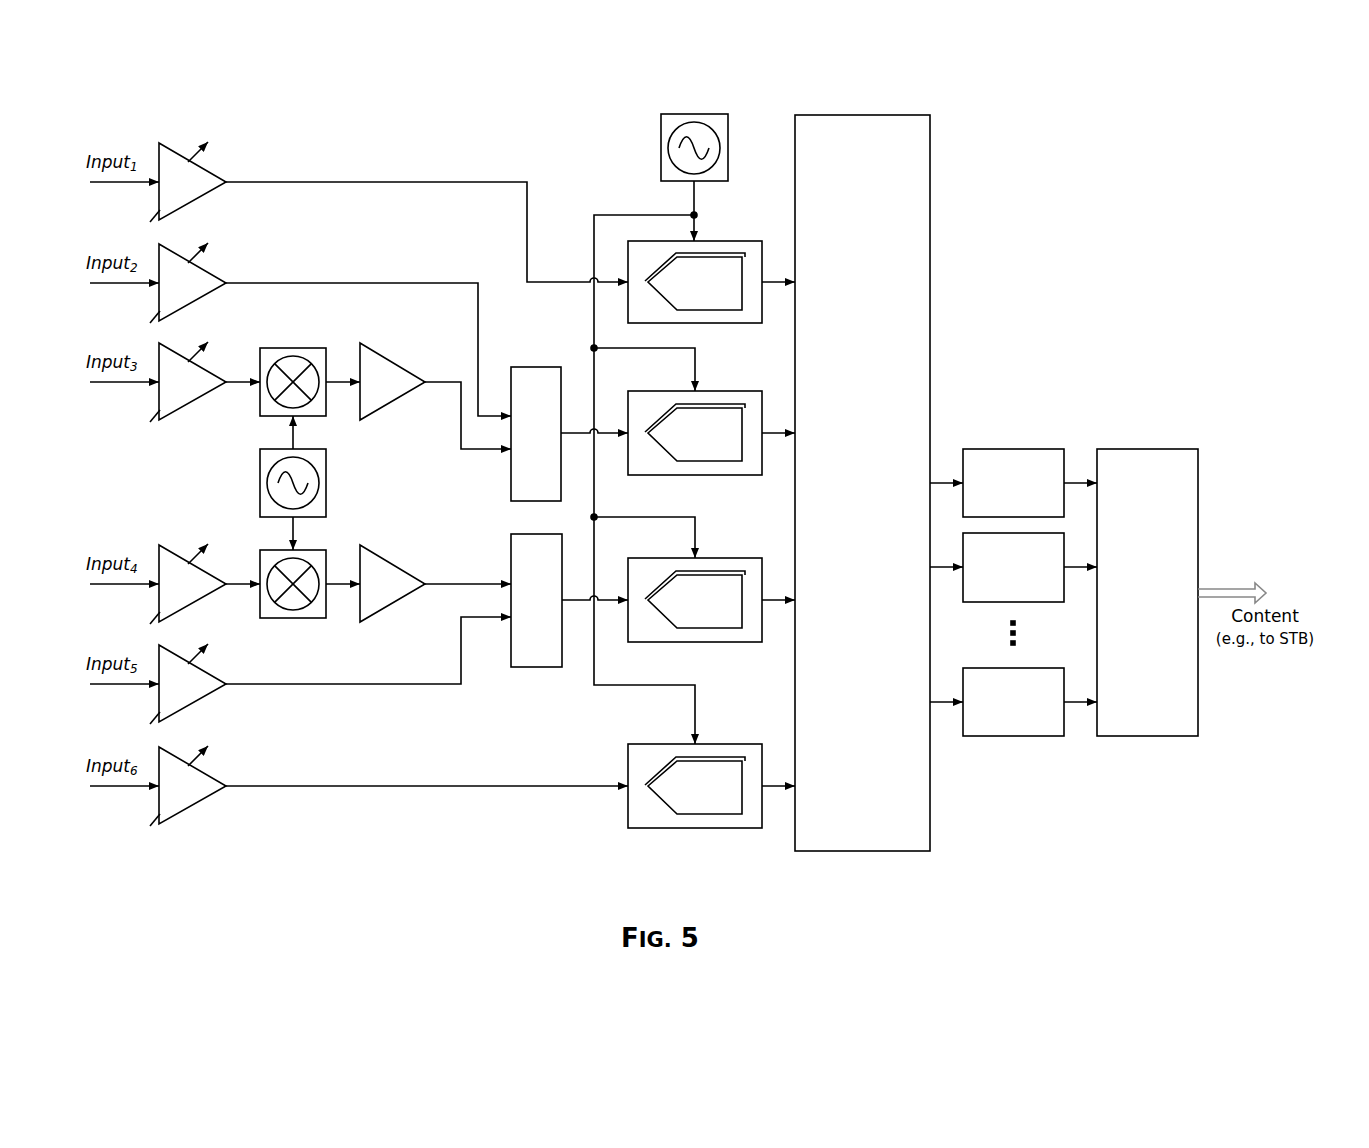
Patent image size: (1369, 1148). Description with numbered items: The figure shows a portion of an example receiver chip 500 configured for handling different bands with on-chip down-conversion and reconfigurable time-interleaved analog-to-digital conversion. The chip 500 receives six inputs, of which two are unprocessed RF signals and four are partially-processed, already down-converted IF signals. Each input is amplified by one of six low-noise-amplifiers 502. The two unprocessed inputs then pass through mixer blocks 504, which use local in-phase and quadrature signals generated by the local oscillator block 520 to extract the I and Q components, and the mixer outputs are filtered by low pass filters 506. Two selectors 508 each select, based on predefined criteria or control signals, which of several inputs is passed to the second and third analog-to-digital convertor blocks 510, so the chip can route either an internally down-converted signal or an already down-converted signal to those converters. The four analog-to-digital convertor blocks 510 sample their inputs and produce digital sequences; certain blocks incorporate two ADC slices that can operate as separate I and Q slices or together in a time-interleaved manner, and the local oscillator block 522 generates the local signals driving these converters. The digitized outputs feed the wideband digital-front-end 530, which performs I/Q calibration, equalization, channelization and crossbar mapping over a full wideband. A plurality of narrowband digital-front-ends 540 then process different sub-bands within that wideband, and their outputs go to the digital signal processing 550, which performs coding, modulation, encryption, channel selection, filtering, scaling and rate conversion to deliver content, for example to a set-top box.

The chip 500 is at (1100, 197).
The low-noise-amplifiers 502 is at (201, 487).
The mixer blocks 504 is at (299, 487).
The low pass filters 506 is at (402, 482).
The selectors 508 is at (543, 520).
The analog-to-digital convertor blocks 510 is at (704, 518).
The local oscillator block 520 is at (327, 490).
The local oscillator block 522 is at (705, 113).
The wideband digital-front-end 530 is at (862, 483).
The narrowband digital-front-ends 540 is at (1013, 592).
The digital signal processing 550 is at (1147, 592).